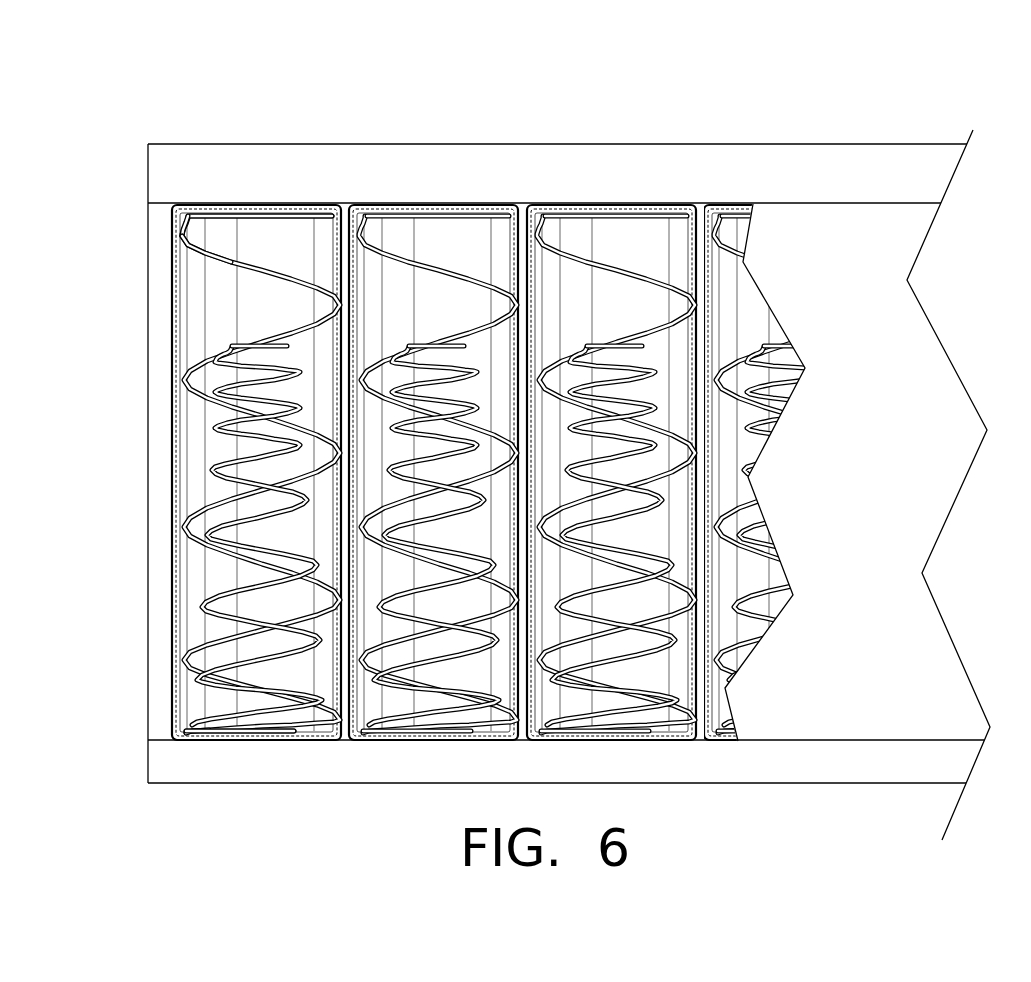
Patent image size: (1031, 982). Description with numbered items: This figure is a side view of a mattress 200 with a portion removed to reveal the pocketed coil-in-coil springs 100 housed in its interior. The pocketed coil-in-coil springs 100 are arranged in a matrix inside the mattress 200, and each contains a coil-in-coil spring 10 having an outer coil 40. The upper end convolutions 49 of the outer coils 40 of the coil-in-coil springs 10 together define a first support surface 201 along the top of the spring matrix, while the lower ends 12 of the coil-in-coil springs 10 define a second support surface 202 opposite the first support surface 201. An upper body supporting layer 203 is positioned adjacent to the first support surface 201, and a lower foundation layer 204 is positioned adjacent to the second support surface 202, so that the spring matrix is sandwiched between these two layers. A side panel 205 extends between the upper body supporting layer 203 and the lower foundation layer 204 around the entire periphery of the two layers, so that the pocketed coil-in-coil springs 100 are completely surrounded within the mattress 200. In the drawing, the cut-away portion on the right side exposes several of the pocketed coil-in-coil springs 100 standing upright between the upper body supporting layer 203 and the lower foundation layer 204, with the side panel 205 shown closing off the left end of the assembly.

The mattress 200 is at (497, 446).
The upper body supporting layer 203 is at (556, 143).
The lower foundation layer 204 is at (213, 783).
The side panel 205 is at (148, 442).
The pocketed coil-in-coil spring 100 is at (174, 592).
The coil-in-coil spring 10 is at (451, 447).
The upper end convolution 49 is at (290, 213).
The first support surface 201 is at (182, 233).
The outer coil 40 is at (232, 260).
The second support surface 202 is at (200, 716).
The lower end 12 is at (294, 731).